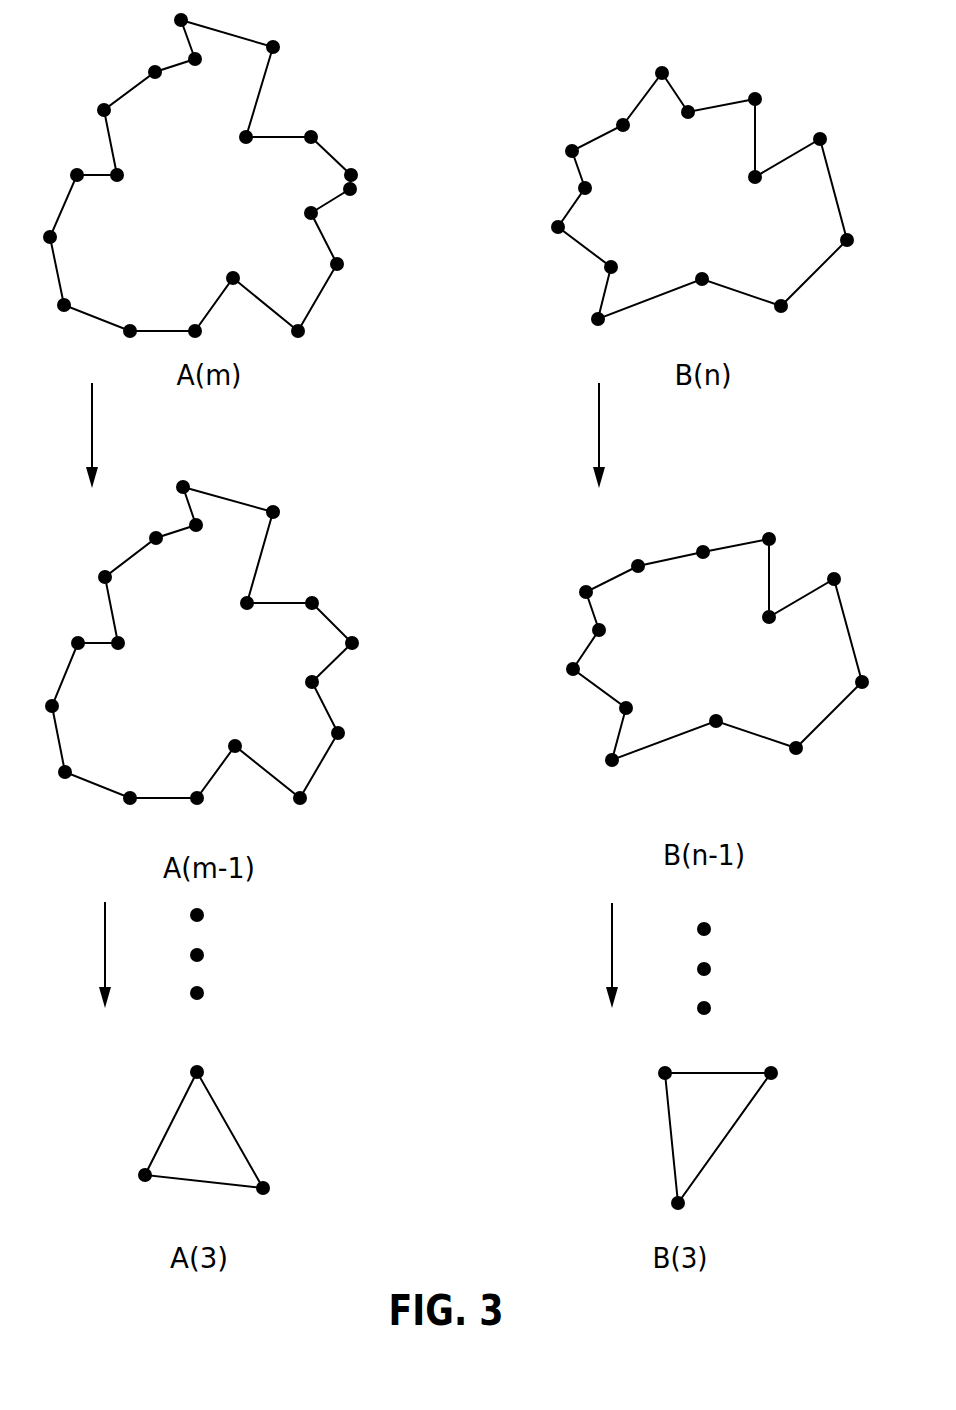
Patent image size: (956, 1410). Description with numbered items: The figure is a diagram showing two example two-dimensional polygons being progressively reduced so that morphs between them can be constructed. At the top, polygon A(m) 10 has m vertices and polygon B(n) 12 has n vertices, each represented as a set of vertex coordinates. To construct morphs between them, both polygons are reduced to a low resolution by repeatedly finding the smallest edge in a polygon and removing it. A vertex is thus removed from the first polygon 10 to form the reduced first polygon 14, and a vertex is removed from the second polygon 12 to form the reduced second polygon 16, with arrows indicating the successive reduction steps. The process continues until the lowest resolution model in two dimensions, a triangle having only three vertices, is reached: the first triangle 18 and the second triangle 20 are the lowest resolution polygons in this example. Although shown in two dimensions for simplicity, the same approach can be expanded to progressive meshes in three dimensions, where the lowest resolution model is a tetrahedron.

The polygon A(m) 10 is at (337, 97).
The polygon B(n) 12 is at (833, 98).
The polygon A(m−1) 14 is at (326, 563).
The polygon B(n−1) 16 is at (835, 538).
The polygon A(3) 18 is at (262, 1123).
The polygon B(3) 20 is at (653, 1178).